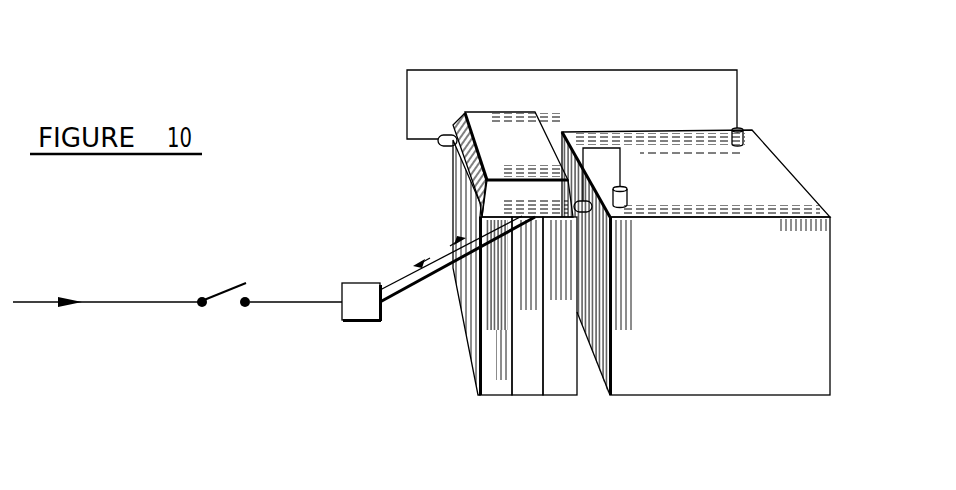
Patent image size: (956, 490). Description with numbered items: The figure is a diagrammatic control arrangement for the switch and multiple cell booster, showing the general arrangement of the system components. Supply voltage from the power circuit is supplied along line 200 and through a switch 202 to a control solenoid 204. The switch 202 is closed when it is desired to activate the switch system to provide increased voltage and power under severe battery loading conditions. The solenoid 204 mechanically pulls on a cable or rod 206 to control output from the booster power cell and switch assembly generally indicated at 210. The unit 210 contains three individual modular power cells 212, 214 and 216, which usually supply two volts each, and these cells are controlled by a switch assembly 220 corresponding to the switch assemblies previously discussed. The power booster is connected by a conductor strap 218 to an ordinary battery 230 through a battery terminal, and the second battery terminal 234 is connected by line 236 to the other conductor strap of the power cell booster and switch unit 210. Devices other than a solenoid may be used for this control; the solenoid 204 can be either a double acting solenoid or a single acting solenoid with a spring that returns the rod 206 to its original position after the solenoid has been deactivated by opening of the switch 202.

The line 200 is at (127, 301).
The switch 202 is at (218, 296).
The control solenoid 204 is at (355, 282).
The cable or rod 206 is at (438, 292).
The booster power cell and switch assembly 210 is at (388, 96).
The modular power cell 212 is at (497, 395).
The modular power cell 214 is at (530, 395).
The modular power cell 216 is at (563, 390).
The conductor strap 218 is at (605, 148).
The switch assembly 220 is at (498, 118).
The battery 230 is at (740, 333).
The second battery terminal 234 is at (745, 134).
The line 236 is at (660, 70).